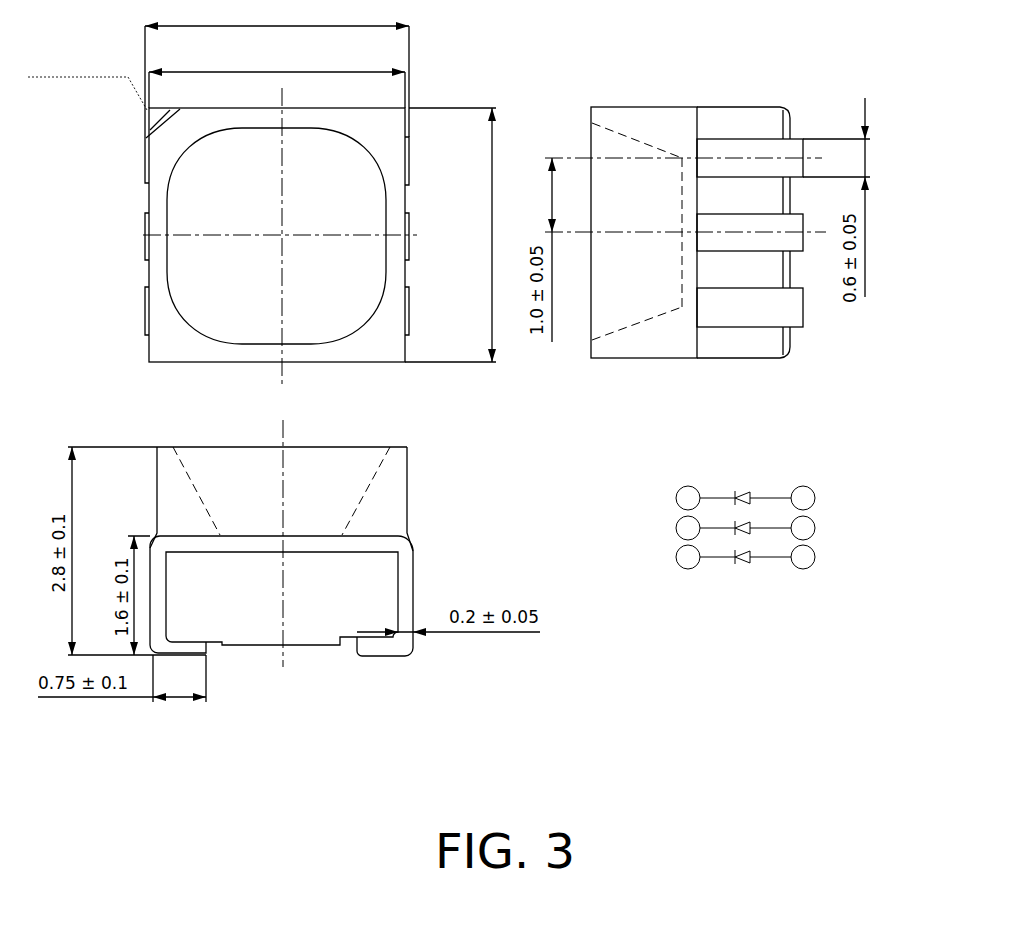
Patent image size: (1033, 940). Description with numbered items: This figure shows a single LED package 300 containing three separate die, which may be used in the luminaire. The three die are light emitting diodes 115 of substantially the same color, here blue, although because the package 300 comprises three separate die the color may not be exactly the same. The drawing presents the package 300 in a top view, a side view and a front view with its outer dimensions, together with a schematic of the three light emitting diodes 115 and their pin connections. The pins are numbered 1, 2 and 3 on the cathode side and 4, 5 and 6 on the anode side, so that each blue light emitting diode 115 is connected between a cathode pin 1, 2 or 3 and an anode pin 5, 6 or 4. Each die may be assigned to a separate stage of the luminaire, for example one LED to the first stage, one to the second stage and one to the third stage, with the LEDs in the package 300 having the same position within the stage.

The single LED package 300 is at (262, 193).
The light emitting diodes 115 is at (732, 558).
The pin 1 (blue cathode) 1 is at (126, 104).
The pin 2 (blue cathode) 2 is at (126, 236).
The pin 3 (blue cathode) 3 is at (126, 311).
The pin 4 (blue anode) 4 is at (425, 311).
The pin 5 (blue anode) 5 is at (425, 236).
The pin 6 (blue anode) 6 is at (425, 161).